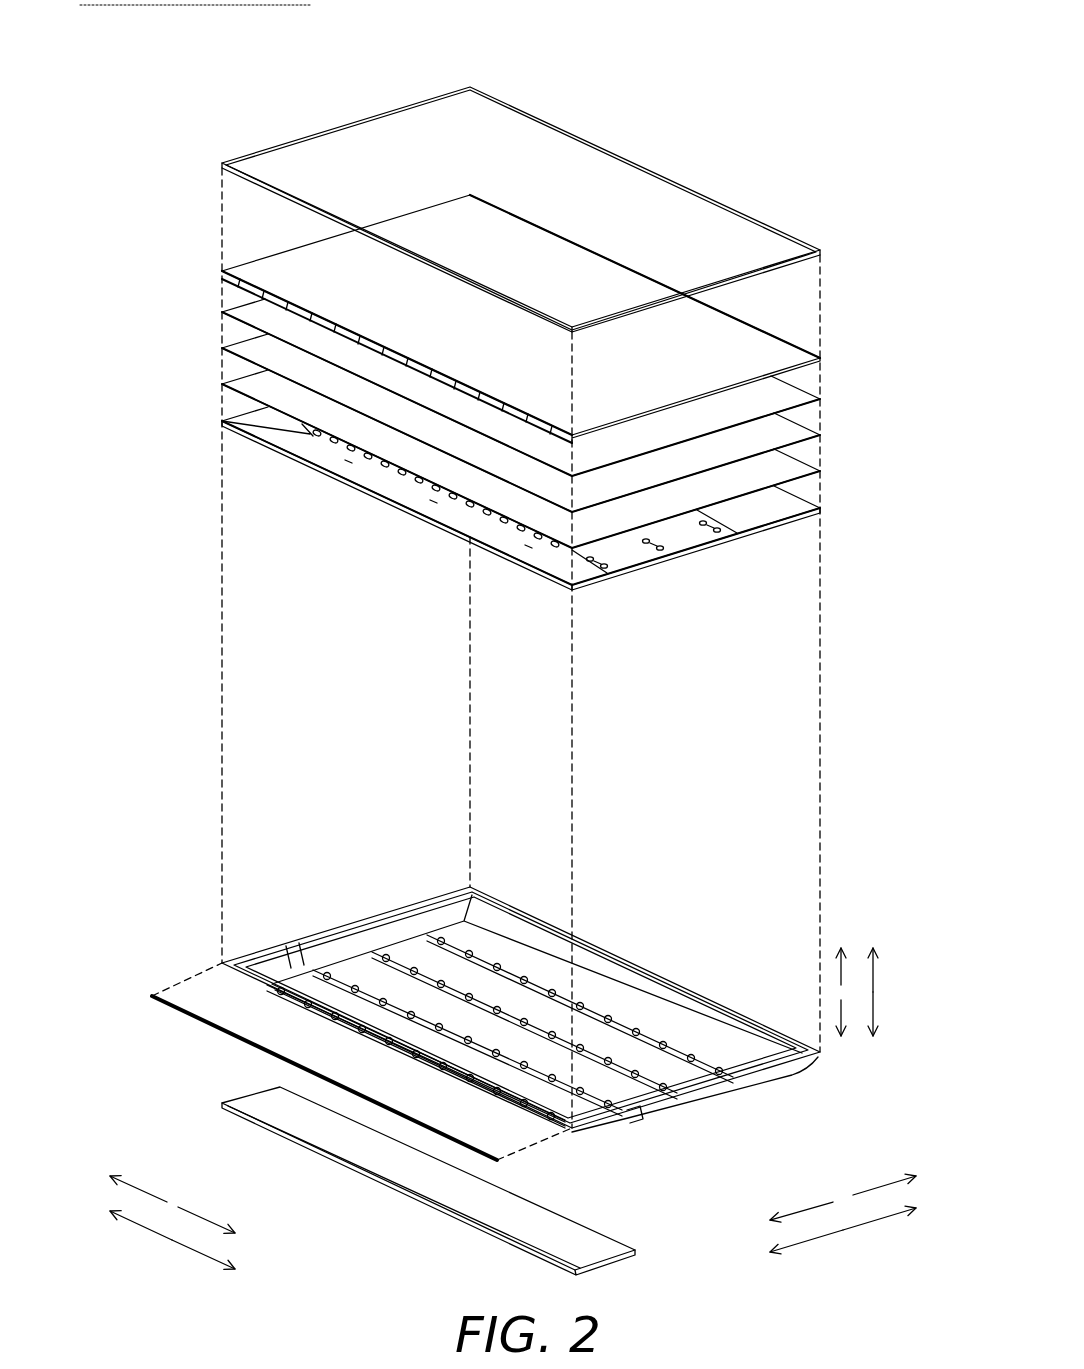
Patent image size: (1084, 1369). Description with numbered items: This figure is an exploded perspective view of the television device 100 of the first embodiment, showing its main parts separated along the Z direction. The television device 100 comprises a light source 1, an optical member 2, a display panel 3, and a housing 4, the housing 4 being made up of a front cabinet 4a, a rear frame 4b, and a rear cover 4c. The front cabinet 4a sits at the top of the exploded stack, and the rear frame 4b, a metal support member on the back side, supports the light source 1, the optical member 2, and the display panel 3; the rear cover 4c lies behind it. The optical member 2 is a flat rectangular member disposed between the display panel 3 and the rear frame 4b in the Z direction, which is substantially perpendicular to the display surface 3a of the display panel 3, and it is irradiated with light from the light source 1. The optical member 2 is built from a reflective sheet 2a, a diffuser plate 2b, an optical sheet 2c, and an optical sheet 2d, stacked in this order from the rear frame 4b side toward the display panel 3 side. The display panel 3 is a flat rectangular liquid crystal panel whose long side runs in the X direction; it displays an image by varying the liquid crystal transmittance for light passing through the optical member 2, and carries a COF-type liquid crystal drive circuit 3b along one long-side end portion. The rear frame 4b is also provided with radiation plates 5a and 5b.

The television device 100 is at (766, 126).
The light source 1 is at (518, 966).
The optical member 2 is at (878, 370).
The reflective sheet 2a is at (821, 502).
The diffuser plate 2b is at (821, 462).
The optical sheet 2c is at (821, 392).
The optical sheet 2d is at (821, 426).
The display panel 3 is at (821, 347).
The display surface 3a is at (733, 357).
The liquid crystal drive circuit 3b is at (282, 303).
The housing 4 is at (802, 224).
The front cabinet 4a is at (724, 203).
The rear frame 4b is at (694, 978).
The rear cover 4c is at (584, 1189).
The radiation plate 5a is at (400, 1115).
The radiation plate 5b is at (245, 1043).